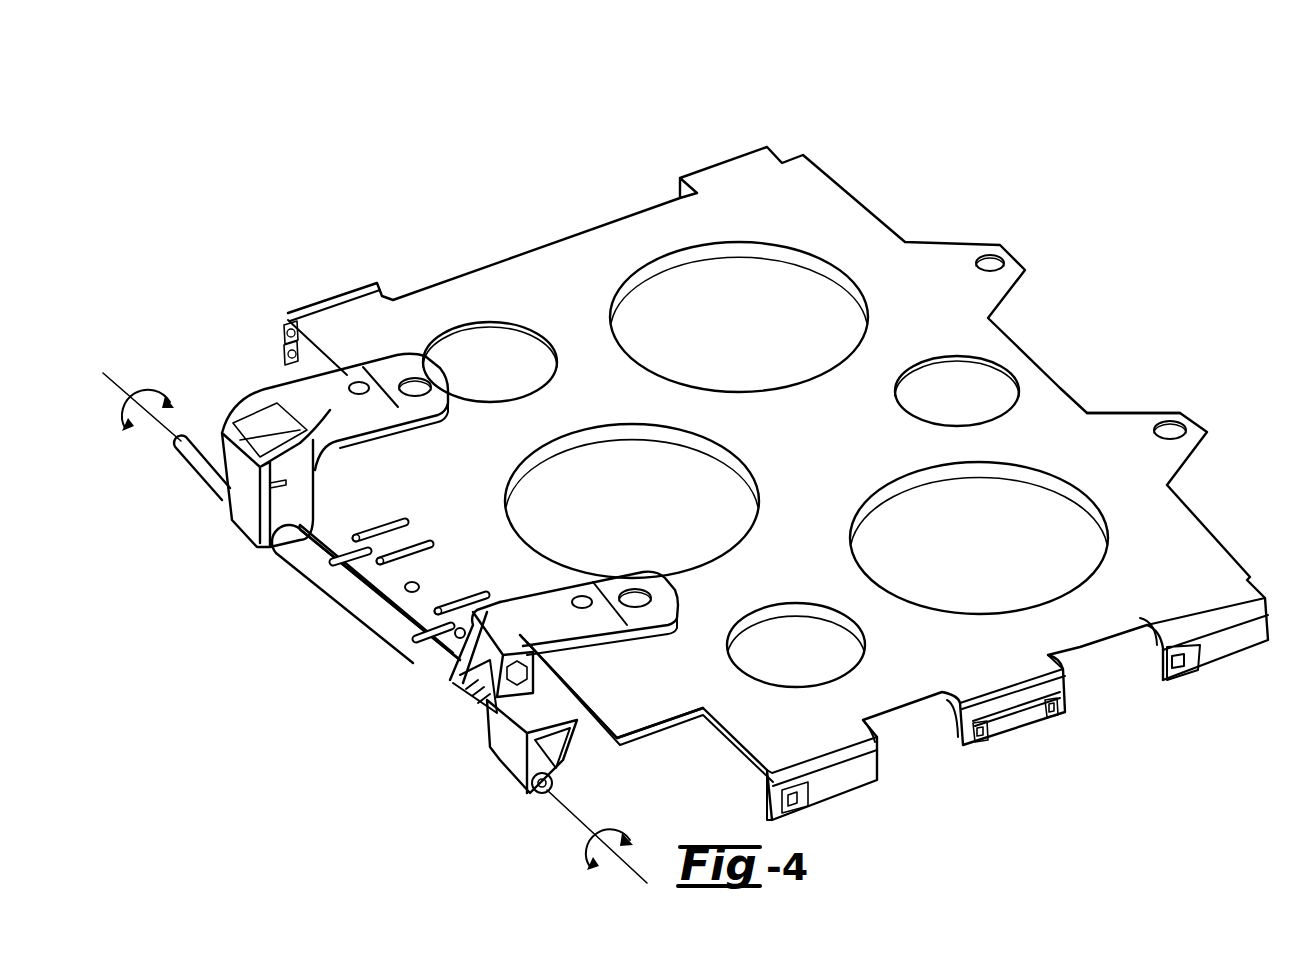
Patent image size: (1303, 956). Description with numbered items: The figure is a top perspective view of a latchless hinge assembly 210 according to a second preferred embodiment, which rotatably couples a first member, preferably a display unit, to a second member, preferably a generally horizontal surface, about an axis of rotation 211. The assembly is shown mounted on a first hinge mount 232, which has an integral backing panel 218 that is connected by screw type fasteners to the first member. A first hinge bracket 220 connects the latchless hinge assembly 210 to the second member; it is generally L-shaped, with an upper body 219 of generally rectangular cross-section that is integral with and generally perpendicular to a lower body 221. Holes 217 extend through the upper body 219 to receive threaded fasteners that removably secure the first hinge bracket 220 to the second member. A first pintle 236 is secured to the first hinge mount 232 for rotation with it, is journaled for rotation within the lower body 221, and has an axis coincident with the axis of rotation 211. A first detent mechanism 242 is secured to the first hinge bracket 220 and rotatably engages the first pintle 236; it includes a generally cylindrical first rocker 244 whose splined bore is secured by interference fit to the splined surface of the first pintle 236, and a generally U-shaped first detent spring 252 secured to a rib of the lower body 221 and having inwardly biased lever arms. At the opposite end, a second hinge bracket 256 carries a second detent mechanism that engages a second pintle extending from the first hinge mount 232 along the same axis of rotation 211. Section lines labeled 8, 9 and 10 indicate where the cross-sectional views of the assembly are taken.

The latchless hinge assembly 210 is at (876, 106).
The axis of rotation 211 is at (103, 373).
The second hinge bracket 256 is at (256, 352).
The backing panel 218 is at (1050, 420).
The first hinge bracket 220 is at (597, 680).
The upper body 219 is at (558, 597).
The holes 217 is at (583, 597).
The first hinge mount 232 is at (357, 580).
The lower body 221 is at (447, 672).
The first detent mechanism 242 is at (580, 690).
The first rocker 244 is at (557, 780).
The first detent spring 252 is at (513, 768).
The first pintle 236 is at (533, 798).
The section line 10 is at (905, 242).
The section line 9 is at (1213, 430).
The section line 8 is at (1253, 482).